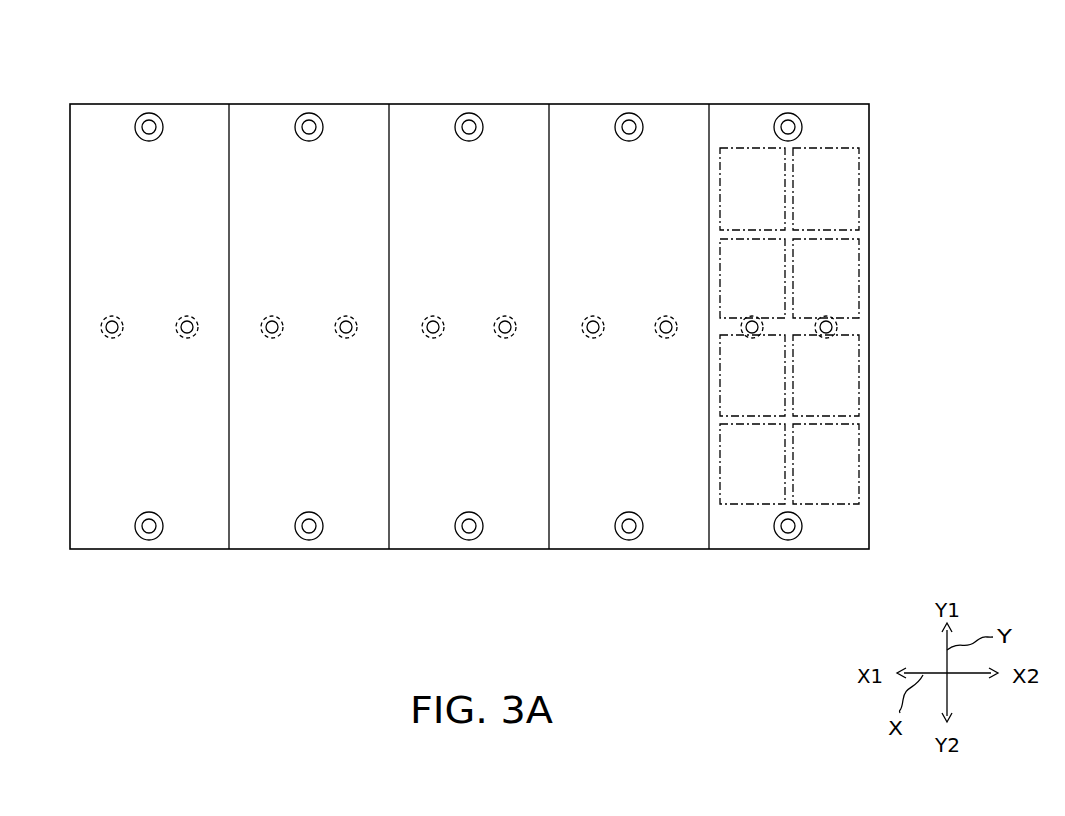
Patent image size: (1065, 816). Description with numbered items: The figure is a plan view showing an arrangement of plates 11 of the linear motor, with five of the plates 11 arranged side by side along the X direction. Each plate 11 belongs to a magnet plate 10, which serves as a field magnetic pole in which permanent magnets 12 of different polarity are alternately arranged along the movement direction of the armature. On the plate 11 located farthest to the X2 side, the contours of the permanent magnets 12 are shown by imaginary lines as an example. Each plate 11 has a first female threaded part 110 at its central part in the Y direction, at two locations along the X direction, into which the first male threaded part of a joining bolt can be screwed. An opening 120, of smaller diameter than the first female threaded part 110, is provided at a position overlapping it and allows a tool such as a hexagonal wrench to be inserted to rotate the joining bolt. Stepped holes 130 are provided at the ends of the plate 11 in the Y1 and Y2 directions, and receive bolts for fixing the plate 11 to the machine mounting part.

The magnet plate 10 is at (482, 283).
The plate 11 is at (192, 118).
The permanent magnet 12 is at (850, 183).
The first female threaded part 110 is at (666, 316).
The opening 120 is at (660, 338).
The stepped hole 130 is at (793, 113).